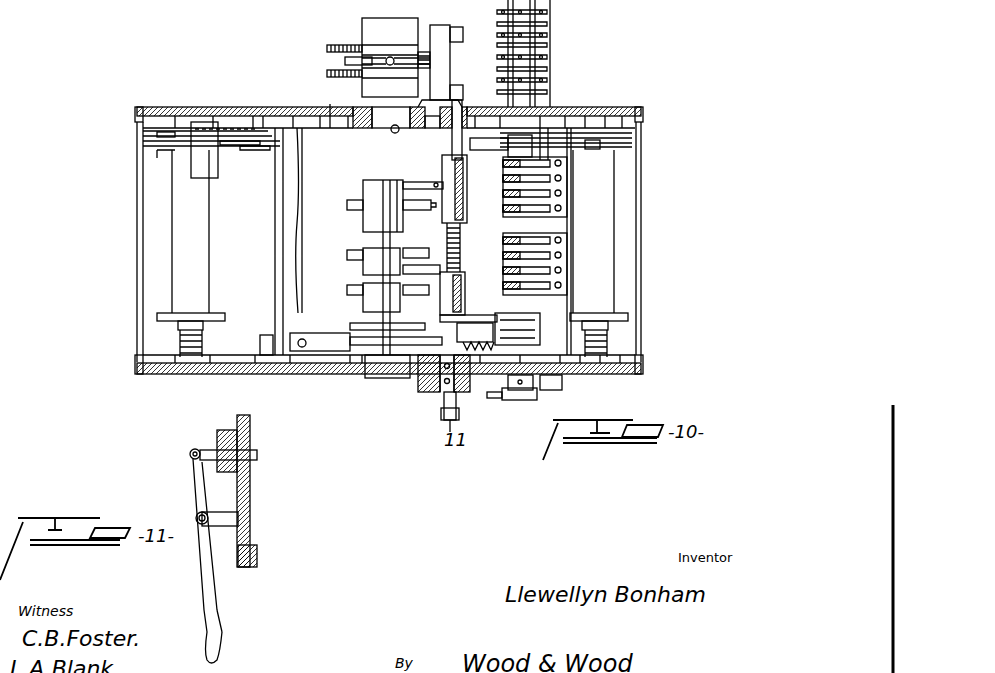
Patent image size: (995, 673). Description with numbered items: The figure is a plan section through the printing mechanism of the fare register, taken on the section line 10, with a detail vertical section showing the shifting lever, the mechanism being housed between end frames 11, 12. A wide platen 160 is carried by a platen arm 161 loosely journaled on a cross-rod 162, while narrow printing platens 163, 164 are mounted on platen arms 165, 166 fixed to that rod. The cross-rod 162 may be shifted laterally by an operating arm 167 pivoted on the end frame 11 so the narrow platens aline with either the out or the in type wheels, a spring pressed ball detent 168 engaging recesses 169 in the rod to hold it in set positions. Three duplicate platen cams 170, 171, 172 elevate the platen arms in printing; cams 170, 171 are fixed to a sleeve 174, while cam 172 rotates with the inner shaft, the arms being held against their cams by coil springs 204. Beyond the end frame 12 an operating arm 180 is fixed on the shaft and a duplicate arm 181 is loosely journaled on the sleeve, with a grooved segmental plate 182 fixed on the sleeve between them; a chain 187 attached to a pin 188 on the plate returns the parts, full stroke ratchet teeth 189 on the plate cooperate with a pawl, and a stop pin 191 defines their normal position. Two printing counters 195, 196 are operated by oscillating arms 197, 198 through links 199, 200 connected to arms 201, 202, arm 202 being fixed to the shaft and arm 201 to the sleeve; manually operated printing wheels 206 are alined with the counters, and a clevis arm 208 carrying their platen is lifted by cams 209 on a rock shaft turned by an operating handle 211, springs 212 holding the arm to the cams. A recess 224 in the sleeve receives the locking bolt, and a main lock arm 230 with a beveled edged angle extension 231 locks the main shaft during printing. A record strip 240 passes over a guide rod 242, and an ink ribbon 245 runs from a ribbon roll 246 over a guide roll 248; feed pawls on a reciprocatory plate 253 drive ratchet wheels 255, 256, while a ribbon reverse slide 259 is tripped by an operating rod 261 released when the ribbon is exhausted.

In FIG. 10, the section line 10 is at (624, 300).
In FIG. 11, the section line 10 is at (257, 552).
In FIG. 10, the end frame 11 is at (332, 372).
In FIG. 11, the end frame 11 is at (240, 547).
In FIG. 10, the end frame 12 is at (248, 108).
In FIG. 10, the wide platen 160 is at (388, 180).
In FIG. 10, the platen arm 161 is at (405, 182).
In FIG. 10, the cross-rod 162 is at (444, 404).
In FIG. 11, the cross-rod 162 is at (206, 452).
In FIG. 10, the narrow printing platen 163 is at (374, 247).
In FIG. 10, the narrow printing platen 164 is at (368, 278).
In FIG. 10, the platen arm 165 is at (360, 261).
In FIG. 10, the platen arm 166 is at (362, 296).
In FIG. 10, the operating arm 167 is at (459, 415).
In FIG. 11, the operating arm 167 is at (198, 497).
In FIG. 11, the spring pressed ball detent 168 is at (240, 445).
In FIG. 10, the recesses 169 is at (468, 381).
In FIG. 11, the recesses 169 is at (238, 458).
In FIG. 10, the platen cam 170 is at (419, 211).
In FIG. 10, the platen cam 171 is at (422, 253).
In FIG. 10, the platen cam 172 is at (418, 294).
In FIG. 10, the sleeve 174 is at (378, 173).
In FIG. 10, the operating arm 180 is at (418, 22).
In FIG. 10, the duplicate arm 181 is at (463, 94).
In FIG. 10, the grooved segmental plate 182 is at (340, 44).
In FIG. 10, the chain 187 is at (345, 55).
In FIG. 10, the pin 188 is at (386, 66).
In FIG. 10, the full stroke ratchet teeth 189 is at (327, 75).
In FIG. 10, the stop pin 191 is at (442, 77).
In FIG. 10, the printing counter 195 is at (503, 242).
In FIG. 10, the printing counter 196 is at (503, 277).
In FIG. 10, the oscillating arm 197 is at (535, 330).
In FIG. 10, the oscillating arm 198 is at (540, 340).
In FIG. 10, the link 199 is at (387, 366).
In FIG. 10, the link 200 is at (430, 370).
In FIG. 10, the arm 201 is at (358, 322).
In FIG. 10, the arm 202 is at (360, 341).
In FIG. 10, the coil springs 204 is at (442, 177).
In FIG. 10, the manually operated printing wheels 206 is at (503, 202).
In FIG. 10, the clevis arm 208 is at (504, 162).
In FIG. 10, the cams 209 is at (498, 192).
In FIG. 10, the operating handle 211 is at (500, 397).
In FIG. 10, the springs 212 is at (496, 242).
In FIG. 10, the recess 224 is at (398, 128).
In FIG. 10, the main lock arm 230 is at (327, 108).
In FIG. 10, the beveled edged angle extension 231 is at (206, 169).
In FIG. 10, the record strip 240 is at (612, 226).
In FIG. 10, the guide rod 242 is at (289, 317).
In FIG. 10, the ink ribbon 245 is at (258, 318).
In FIG. 10, the ribbon roll 246 is at (178, 247).
In FIG. 10, the guide roll 248 is at (431, 335).
In FIG. 10, the reciprocatory plate 253 is at (360, 142).
In FIG. 10, the ratchet wheel 255 is at (605, 142).
In FIG. 10, the ratchet wheel 256 is at (172, 134).
In FIG. 10, the slide 259 is at (322, 142).
In FIG. 10, the operating rod 261 is at (612, 150).